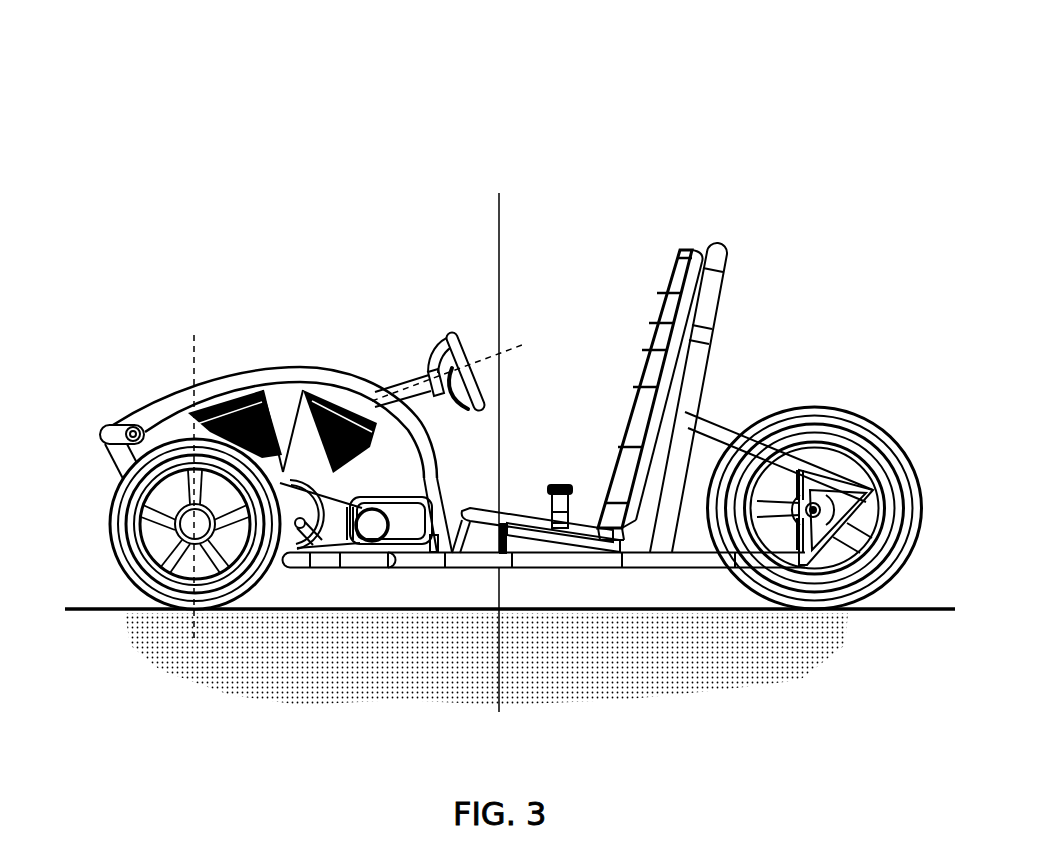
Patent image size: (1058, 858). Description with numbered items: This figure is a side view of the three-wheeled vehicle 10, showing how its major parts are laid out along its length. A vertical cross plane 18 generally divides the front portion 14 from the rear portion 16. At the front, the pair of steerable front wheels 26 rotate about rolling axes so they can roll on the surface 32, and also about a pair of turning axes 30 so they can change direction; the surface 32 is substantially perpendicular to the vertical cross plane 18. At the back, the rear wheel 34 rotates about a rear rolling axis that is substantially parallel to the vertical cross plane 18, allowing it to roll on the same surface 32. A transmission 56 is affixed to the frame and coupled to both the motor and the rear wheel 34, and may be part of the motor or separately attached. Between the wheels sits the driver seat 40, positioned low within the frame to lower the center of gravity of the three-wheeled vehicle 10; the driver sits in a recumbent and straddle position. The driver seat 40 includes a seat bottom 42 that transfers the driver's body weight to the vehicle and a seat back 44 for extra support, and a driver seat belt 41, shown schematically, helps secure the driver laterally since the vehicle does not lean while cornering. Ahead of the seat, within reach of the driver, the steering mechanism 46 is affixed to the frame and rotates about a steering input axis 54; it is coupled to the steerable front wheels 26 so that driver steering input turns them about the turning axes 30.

The three-wheeled vehicle 10 is at (490, 75).
The front portion 14 is at (244, 422).
The rear portion 16 is at (796, 404).
The vertical cross plane 18 is at (497, 190).
The steerable front wheels 26 is at (104, 543).
The turning axes 30 is at (194, 330).
The surface 32 is at (919, 613).
The rear wheel 34 is at (821, 402).
The driver seat 40 is at (658, 318).
The driver seat belt 41 is at (565, 481).
The seat bottom 42 is at (511, 507).
The seat back 44 is at (641, 374).
The steering mechanism 46 is at (446, 329).
The steering input axis 54 is at (523, 343).
The transmission 56 is at (368, 536).